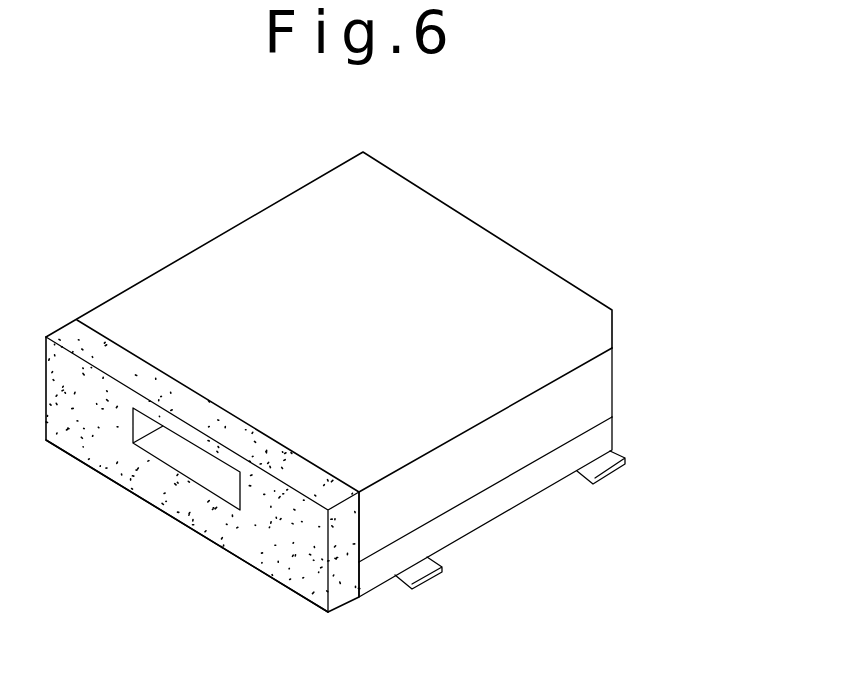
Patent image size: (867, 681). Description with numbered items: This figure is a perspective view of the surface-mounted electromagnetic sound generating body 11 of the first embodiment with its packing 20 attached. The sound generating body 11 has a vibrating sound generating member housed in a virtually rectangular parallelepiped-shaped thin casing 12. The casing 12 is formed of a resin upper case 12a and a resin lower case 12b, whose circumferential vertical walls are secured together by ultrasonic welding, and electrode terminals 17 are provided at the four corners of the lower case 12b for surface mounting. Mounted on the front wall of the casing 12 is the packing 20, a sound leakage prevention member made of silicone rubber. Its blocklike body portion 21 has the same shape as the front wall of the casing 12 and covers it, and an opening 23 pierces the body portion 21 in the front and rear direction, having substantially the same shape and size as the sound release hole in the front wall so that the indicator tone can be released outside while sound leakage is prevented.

The surface-mounted electromagnetic sound generating body 11 is at (348, 381).
The casing 12 is at (329, 355).
The upper case 12a is at (543, 263).
The lower case 12b is at (527, 500).
The electrode terminals 17 is at (427, 572).
The packing 20 is at (203, 484).
The body portion 21 is at (100, 472).
The opening 23 is at (192, 467).